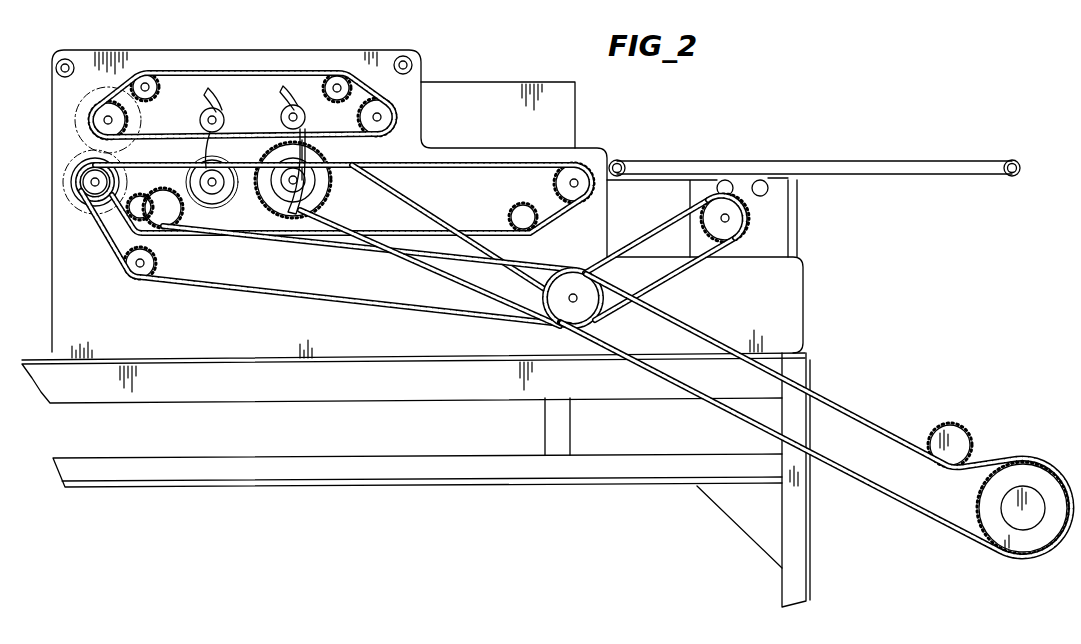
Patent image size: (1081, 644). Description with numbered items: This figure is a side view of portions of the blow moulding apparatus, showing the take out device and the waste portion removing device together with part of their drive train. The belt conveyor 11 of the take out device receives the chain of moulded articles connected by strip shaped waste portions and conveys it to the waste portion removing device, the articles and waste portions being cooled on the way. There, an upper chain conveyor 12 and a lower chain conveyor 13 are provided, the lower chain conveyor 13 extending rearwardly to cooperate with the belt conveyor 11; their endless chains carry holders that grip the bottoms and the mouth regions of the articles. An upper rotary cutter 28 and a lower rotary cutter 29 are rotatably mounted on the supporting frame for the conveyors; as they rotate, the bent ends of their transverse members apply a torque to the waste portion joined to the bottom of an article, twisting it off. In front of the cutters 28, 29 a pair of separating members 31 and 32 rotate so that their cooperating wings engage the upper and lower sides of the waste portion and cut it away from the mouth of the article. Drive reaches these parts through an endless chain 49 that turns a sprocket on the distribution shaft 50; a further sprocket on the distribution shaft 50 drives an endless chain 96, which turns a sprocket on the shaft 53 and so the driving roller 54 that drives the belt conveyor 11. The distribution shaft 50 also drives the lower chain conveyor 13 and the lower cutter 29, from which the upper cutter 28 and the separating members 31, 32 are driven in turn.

The belt conveyor 11 is at (688, 162).
The upper chain conveyor 12 is at (242, 73).
The lower chain conveyor 13 is at (556, 165).
The upper rotary cutter 28 is at (293, 105).
The lower rotary cutter 29 is at (297, 190).
The upper separating member 31 is at (208, 108).
The lower separating member 32 is at (207, 200).
The endless chain 49 is at (850, 415).
The distribution shaft 50 is at (572, 299).
The shaft 53 is at (725, 220).
The driving roller 54 is at (752, 224).
The endless chain 96 is at (666, 272).